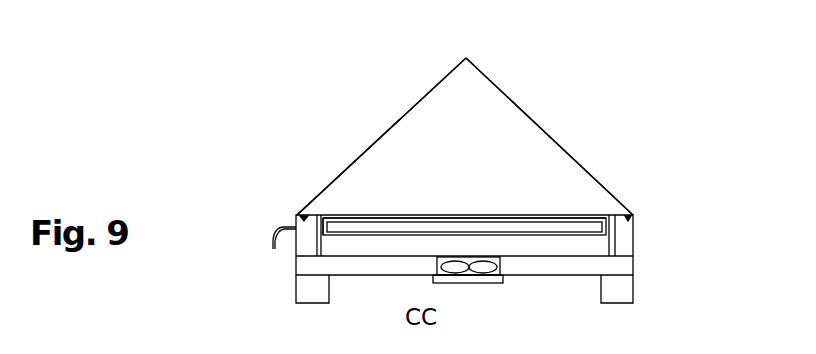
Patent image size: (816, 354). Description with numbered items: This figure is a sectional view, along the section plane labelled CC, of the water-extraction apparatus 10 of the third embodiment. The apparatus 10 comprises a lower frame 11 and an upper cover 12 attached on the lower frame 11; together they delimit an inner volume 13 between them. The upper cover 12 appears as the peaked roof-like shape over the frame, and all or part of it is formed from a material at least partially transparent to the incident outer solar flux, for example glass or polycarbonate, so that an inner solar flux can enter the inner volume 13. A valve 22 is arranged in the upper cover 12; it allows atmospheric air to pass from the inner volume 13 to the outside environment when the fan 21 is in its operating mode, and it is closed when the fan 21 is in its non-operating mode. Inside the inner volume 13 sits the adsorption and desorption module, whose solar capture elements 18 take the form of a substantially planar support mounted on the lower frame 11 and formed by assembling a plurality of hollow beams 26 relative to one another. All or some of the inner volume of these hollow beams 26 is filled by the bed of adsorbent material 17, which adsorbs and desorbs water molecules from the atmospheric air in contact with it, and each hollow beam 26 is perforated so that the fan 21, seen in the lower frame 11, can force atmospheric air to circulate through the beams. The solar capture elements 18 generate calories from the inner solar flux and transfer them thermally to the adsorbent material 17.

The apparatus 10 is at (572, 91).
The lower frame 11 is at (623, 263).
The upper cover 12 is at (372, 133).
The inner volume 13 is at (350, 154).
The adsorbent material 17 is at (576, 228).
The solar capture elements 18 is at (330, 210).
The fan 21 is at (480, 268).
The valve 22 is at (507, 95).
The hollow beams 26 is at (576, 218).